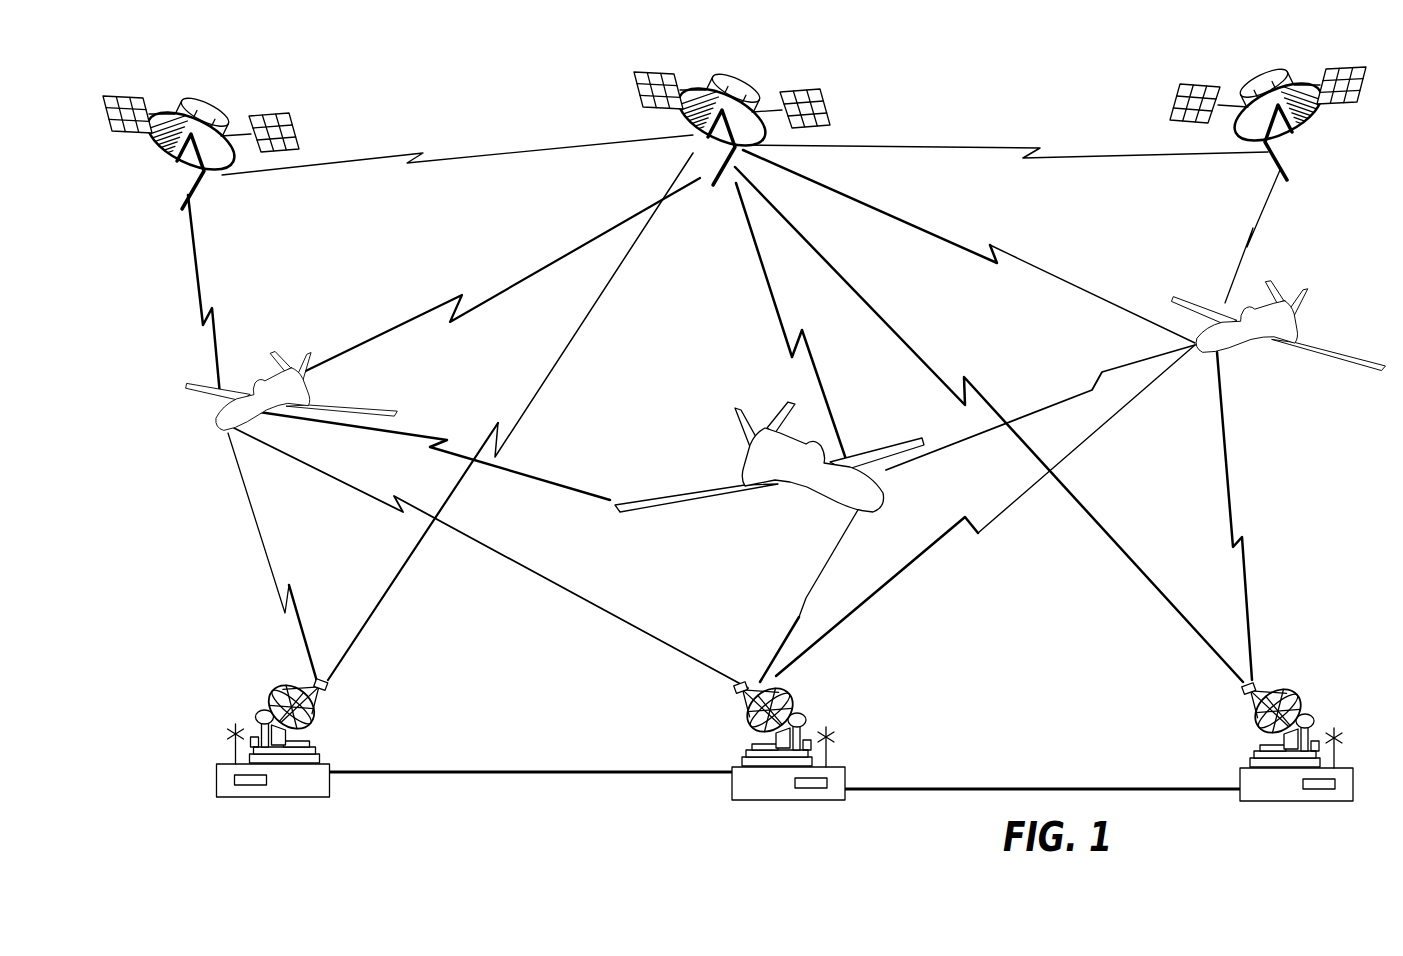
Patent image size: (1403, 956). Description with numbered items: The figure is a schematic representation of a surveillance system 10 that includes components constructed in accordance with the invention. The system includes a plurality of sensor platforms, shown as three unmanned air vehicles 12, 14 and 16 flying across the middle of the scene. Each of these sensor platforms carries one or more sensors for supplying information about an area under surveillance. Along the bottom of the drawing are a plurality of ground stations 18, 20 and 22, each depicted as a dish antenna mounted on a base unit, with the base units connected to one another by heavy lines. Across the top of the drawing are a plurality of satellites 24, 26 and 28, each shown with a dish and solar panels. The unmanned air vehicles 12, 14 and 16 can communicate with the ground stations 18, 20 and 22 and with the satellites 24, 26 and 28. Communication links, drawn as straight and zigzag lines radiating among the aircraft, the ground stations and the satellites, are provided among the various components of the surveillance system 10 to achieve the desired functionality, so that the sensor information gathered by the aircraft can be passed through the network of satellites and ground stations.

The surveillance system 10 is at (684, 347).
The unmanned air vehicle 12 is at (318, 405).
The unmanned air vehicle 14 is at (755, 496).
The unmanned air vehicle 16 is at (1238, 339).
The ground station 18 is at (287, 800).
The ground station 20 is at (806, 801).
The ground station 22 is at (1275, 802).
The satellite 24 is at (206, 106).
The satellite 26 is at (742, 82).
The satellite 28 is at (1262, 77).